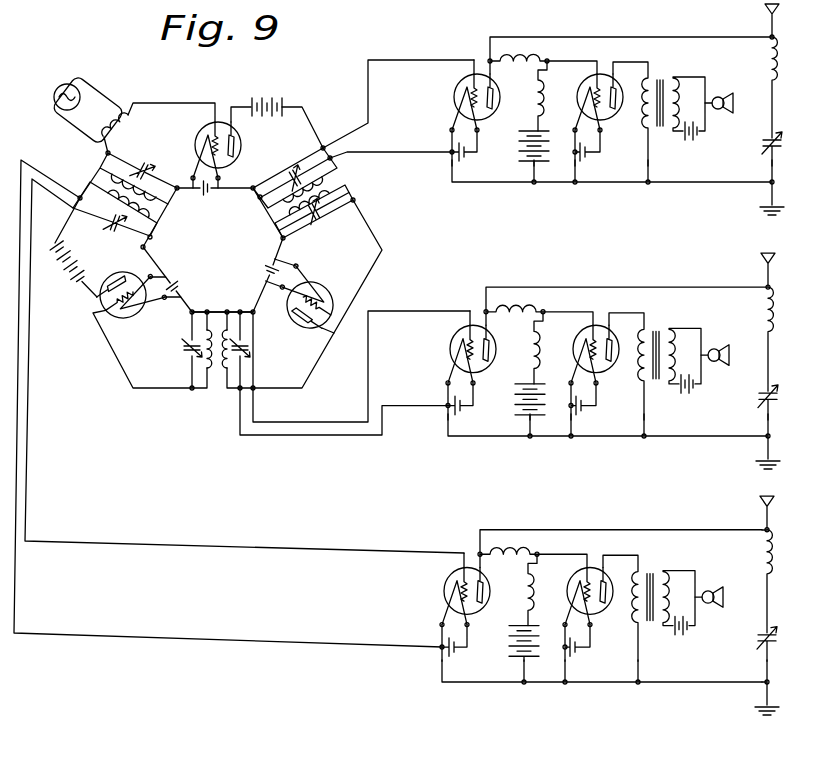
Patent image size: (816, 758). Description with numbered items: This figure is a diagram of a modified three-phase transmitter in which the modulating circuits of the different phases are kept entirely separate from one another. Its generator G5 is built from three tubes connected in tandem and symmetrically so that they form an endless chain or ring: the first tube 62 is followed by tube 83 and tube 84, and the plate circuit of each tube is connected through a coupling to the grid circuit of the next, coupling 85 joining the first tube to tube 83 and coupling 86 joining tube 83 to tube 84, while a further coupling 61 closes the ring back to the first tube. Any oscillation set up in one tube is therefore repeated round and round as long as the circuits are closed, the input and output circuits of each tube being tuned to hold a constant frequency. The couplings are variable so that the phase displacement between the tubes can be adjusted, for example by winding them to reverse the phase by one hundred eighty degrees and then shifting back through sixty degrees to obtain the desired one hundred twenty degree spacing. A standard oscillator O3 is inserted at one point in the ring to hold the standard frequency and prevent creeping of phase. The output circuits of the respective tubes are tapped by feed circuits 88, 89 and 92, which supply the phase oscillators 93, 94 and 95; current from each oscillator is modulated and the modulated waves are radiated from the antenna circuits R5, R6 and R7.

The standard oscillator O3 is at (133, 114).
The generator G5 is at (213, 247).
The input coupling transformer with tuned circuits 61 is at (120, 193).
The vacuum tube of generator 62 is at (250, 143).
The tube 83 is at (317, 294).
The tube 84 is at (121, 293).
The coupling 85 is at (315, 192).
The coupling 86 is at (218, 366).
The feed circuit 88 is at (589, 110).
The feed circuit 89 is at (582, 362).
The feed circuit 92 is at (580, 607).
The phase oscillator 93 is at (462, 83).
The phase oscillator 94 is at (455, 334).
The phase oscillator 95 is at (449, 574).
The receiving antenna station R5 is at (755, 109).
The receiving antenna station R6 is at (755, 357).
The receiving antenna station R7 is at (749, 603).